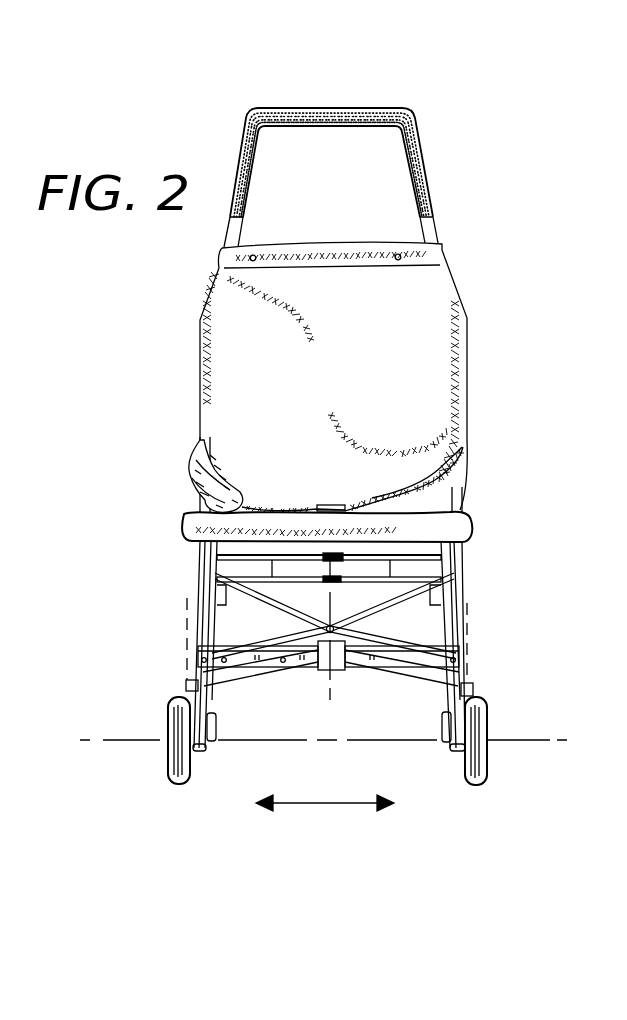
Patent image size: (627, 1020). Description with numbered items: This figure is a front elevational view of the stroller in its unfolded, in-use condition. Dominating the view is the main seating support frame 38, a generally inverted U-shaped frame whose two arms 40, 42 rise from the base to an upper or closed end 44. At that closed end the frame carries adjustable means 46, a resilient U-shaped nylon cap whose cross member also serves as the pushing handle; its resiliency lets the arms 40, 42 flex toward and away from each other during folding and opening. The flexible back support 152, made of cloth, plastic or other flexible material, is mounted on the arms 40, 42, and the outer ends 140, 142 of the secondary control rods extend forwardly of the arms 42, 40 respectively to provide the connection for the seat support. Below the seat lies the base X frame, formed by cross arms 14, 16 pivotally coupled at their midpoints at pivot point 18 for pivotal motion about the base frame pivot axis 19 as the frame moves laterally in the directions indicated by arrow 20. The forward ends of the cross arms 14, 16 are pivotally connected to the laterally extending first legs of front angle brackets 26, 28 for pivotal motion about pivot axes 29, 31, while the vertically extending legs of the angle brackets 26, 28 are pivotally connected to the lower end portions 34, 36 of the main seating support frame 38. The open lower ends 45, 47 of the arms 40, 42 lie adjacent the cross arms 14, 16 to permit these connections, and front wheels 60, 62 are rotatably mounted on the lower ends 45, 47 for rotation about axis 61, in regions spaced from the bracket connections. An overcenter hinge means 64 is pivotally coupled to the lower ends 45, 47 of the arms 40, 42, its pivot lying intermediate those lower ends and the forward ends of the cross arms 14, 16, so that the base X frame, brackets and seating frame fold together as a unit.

The cross arm 14 is at (463, 597).
The cross arm 16 is at (222, 602).
The pivot point 18 is at (332, 628).
The base frame pivot axis 19 is at (330, 597).
The arrow 20 is at (327, 803).
The front angle bracket 26 is at (186, 683).
The front angle bracket 28 is at (473, 690).
The pivot axis 29 is at (187, 623).
The pivot axis 31 is at (467, 623).
The lower end portion 34 is at (203, 698).
The lower end portion 36 is at (465, 691).
The main seating support frame 38 is at (434, 218).
The arm 40 is at (198, 553).
The arm 42 is at (463, 560).
The upper or closed end 44 is at (247, 133).
The lower end 45 is at (206, 746).
The adjustable means 46 is at (352, 105).
The lower end 47 is at (449, 747).
The front wheel 60 is at (170, 757).
The axis 61 is at (517, 743).
The front wheel 62 is at (486, 762).
The overcenter hinge means 64 is at (460, 643).
The outer end 140 is at (473, 518).
The outer end 142 is at (187, 513).
The back support 152 is at (340, 372).